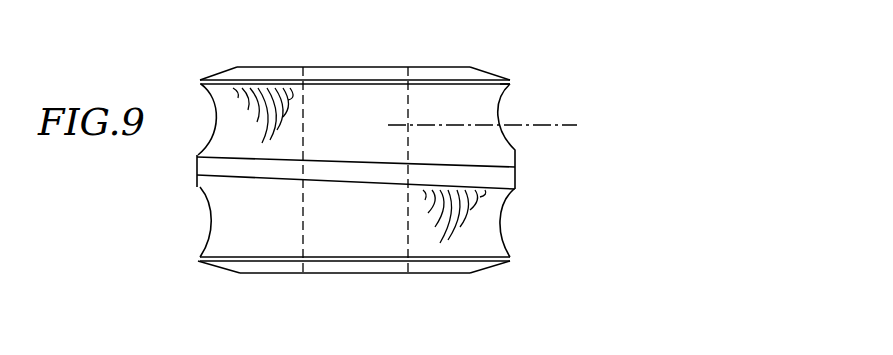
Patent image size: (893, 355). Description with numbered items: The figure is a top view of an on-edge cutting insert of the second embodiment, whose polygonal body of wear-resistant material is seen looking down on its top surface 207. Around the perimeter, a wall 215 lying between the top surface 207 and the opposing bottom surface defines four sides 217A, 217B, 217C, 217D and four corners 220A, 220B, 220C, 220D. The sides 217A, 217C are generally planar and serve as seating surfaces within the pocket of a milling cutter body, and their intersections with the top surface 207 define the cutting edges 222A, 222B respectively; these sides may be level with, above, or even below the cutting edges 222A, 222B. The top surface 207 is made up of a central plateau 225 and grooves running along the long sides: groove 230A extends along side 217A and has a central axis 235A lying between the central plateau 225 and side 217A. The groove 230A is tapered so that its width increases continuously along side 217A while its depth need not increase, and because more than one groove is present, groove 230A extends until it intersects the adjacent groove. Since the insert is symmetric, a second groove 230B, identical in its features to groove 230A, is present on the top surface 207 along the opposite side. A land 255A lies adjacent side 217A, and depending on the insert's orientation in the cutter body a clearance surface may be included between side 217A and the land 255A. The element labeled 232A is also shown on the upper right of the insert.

The top surface 207 is at (330, 180).
The wall 215 is at (447, 273).
The side 217A is at (392, 67).
The side 217B is at (515, 178).
The side 217C is at (257, 275).
The side 217D is at (197, 173).
The corner 220A is at (222, 78).
The corner 220B is at (490, 72).
The corner 220C is at (493, 267).
The corner 220D is at (220, 272).
The cutting edge 222A is at (363, 82).
The cutting edge 222B is at (360, 263).
The central plateau 225 is at (378, 165).
The groove 230A is at (317, 97).
The groove 230B is at (335, 250).
The upper right edge 232A is at (510, 83).
The central axis 235A is at (562, 127).
The land 255A is at (455, 67).